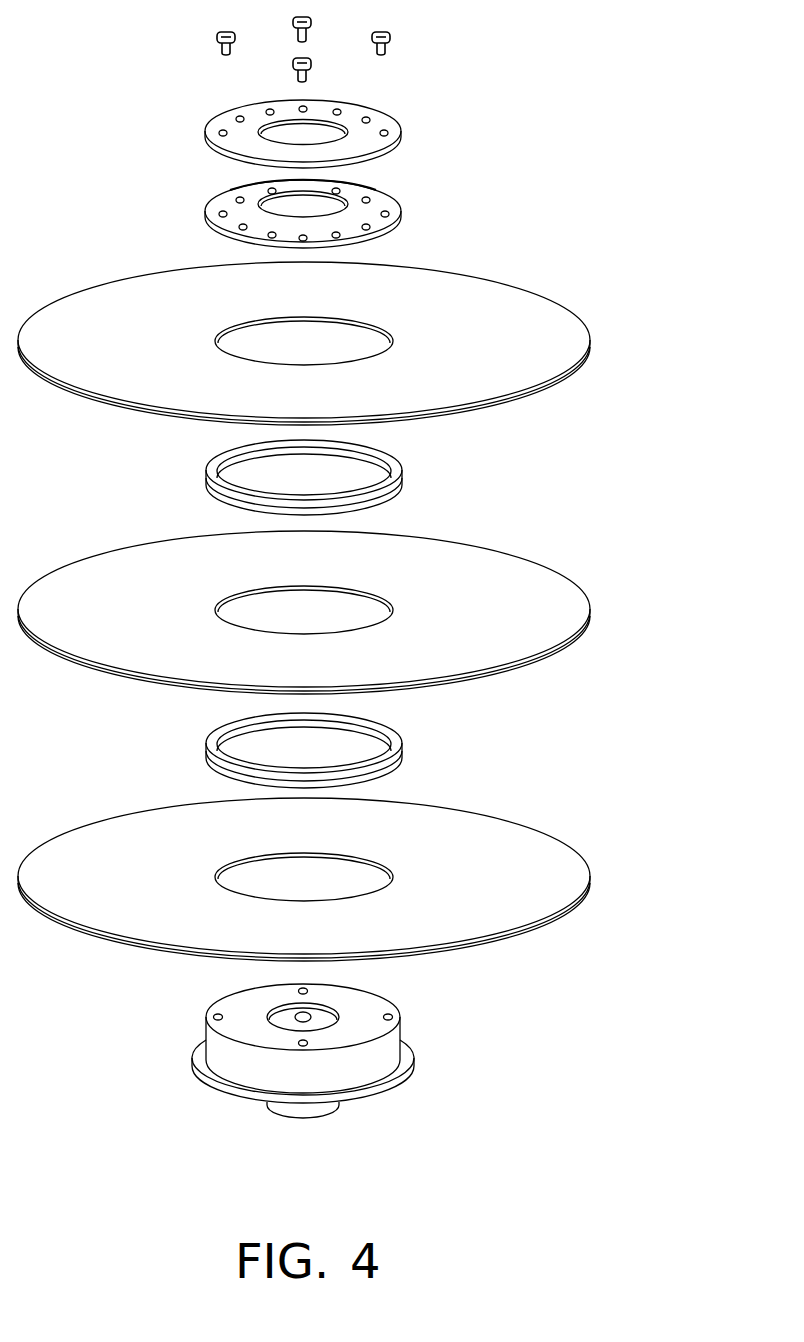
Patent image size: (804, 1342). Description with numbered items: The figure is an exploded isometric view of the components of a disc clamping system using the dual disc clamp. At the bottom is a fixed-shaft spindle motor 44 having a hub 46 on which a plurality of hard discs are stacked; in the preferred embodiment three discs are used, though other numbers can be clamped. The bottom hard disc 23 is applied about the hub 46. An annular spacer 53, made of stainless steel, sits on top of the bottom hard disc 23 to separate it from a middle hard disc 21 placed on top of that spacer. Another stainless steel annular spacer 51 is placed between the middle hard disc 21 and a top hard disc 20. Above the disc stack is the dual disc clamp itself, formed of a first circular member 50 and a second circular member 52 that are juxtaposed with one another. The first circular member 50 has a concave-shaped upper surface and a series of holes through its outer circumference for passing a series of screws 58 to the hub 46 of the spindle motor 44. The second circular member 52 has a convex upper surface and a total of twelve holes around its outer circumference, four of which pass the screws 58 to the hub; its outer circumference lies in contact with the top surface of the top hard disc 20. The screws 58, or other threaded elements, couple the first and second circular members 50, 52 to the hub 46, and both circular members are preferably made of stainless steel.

The screws 58 is at (163, 28).
The first circular member 50 is at (440, 108).
The second circular member 52 is at (445, 196).
The top hard disc 20 is at (580, 258).
The annular spacer 51 is at (141, 456).
The middle hard disc 21 is at (572, 539).
The annular spacer 53 is at (126, 732).
The bottom hard disc 23 is at (587, 814).
The hub 46 is at (467, 1022).
The spindle motor 44 is at (441, 1109).